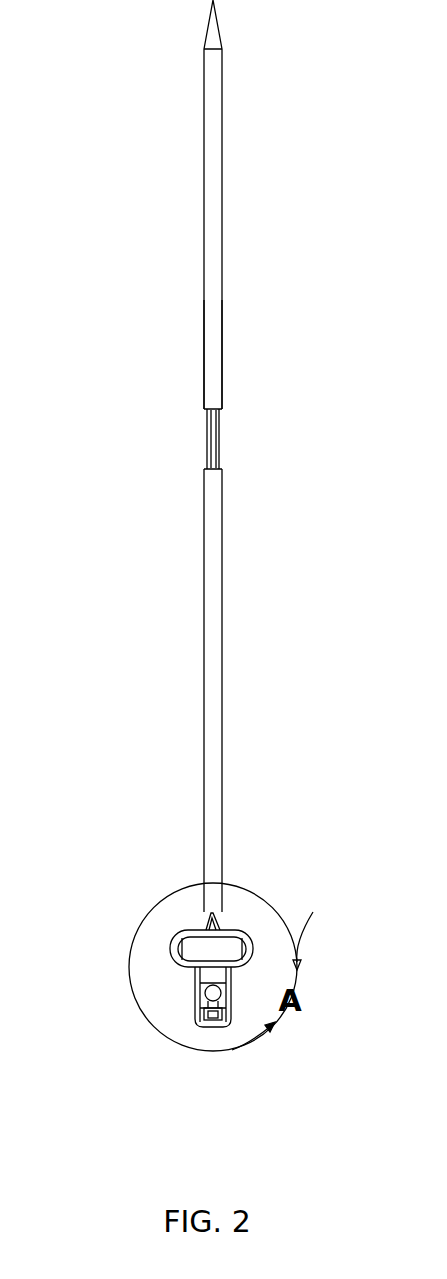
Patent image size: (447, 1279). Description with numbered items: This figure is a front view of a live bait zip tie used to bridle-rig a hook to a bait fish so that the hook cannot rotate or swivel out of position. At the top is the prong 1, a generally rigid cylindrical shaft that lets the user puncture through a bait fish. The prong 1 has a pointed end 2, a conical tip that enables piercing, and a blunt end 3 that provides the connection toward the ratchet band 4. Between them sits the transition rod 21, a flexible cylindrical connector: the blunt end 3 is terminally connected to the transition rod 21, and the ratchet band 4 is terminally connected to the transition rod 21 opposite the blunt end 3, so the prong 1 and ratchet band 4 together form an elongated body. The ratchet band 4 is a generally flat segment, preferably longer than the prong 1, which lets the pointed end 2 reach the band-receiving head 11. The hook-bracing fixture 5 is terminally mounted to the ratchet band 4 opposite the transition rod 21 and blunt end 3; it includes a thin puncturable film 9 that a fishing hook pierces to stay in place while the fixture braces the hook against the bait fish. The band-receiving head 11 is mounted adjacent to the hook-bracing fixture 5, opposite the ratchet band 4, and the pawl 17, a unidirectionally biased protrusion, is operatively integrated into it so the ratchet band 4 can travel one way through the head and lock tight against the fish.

The prong 1 is at (222, 155).
The pointed end 2 is at (190, 68).
The blunt end 3 is at (195, 372).
The transition rod 21 is at (213, 438).
The ratchet band 4 is at (210, 635).
The hook-bracing fixture 5 is at (168, 926).
The puncturable film 9 is at (220, 945).
The band-receiving head 11 is at (181, 1020).
The pawl 17 is at (215, 1025).